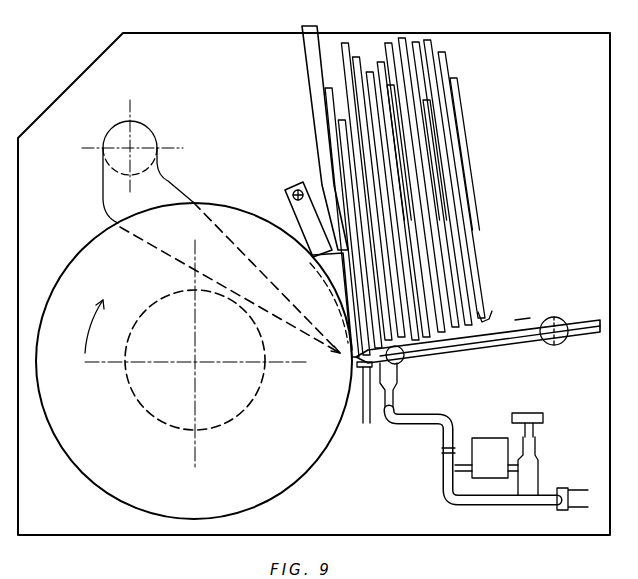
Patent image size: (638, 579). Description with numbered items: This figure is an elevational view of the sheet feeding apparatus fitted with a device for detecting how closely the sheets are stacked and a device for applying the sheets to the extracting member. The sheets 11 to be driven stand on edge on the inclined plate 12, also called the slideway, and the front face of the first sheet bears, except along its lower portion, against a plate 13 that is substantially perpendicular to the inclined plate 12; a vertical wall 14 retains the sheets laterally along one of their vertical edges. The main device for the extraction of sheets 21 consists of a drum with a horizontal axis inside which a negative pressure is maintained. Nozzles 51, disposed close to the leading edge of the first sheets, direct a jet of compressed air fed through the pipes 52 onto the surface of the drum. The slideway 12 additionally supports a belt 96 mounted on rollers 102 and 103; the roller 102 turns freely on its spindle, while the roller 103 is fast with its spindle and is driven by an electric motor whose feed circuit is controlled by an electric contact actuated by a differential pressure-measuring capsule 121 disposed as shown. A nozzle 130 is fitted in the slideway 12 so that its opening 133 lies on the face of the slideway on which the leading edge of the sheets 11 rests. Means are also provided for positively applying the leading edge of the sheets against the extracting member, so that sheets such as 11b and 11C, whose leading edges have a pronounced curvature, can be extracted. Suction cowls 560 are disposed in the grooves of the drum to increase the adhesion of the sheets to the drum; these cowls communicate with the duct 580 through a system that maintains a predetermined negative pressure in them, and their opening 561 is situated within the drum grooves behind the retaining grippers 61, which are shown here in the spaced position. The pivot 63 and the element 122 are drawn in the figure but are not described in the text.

The vertical wall 14 is at (520, 42).
The main device for the extraction of sheets 21 is at (57, 283).
The duct 580 is at (117, 136).
The suction cowls 560 is at (174, 253).
The opening 561 is at (324, 300).
The pivot 63 is at (294, 190).
The retaining gripper 61 is at (332, 263).
The plate 13 is at (312, 63).
The sheets 11 is at (450, 150).
The sheet 11b is at (490, 313).
The sheet 11C is at (518, 318).
The inclined plate 12 is at (435, 360).
The roller 103 is at (456, 360).
The belt 96 is at (562, 320).
The roller 102 is at (556, 346).
The opening 133 is at (398, 360).
The nozzles 51 is at (357, 366).
The pipes 52 is at (366, 412).
The nozzle 130 is at (397, 378).
The differential pressure-measuring capsule 121 is at (508, 508).
The valve box 122 is at (490, 445).